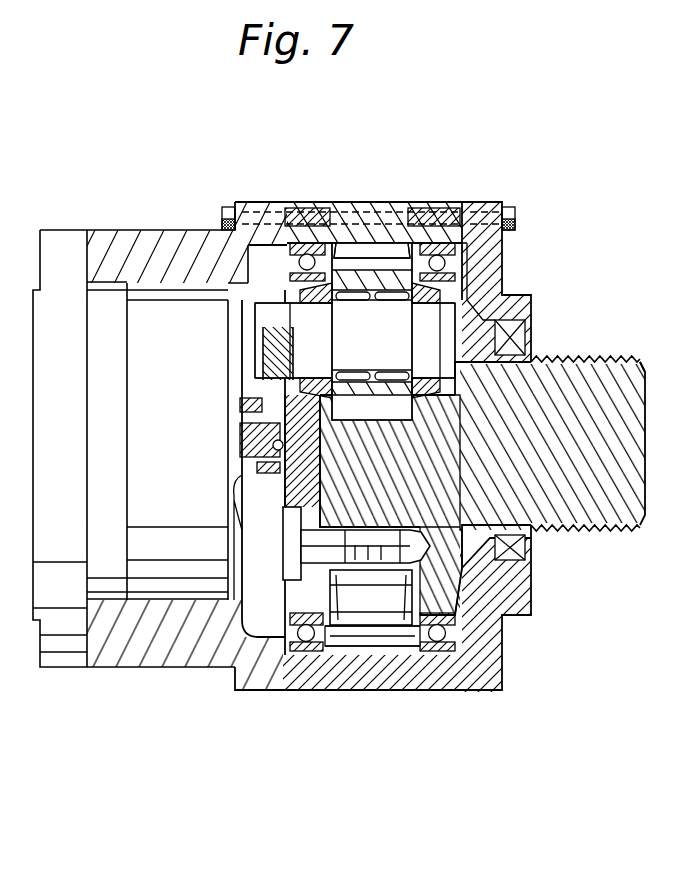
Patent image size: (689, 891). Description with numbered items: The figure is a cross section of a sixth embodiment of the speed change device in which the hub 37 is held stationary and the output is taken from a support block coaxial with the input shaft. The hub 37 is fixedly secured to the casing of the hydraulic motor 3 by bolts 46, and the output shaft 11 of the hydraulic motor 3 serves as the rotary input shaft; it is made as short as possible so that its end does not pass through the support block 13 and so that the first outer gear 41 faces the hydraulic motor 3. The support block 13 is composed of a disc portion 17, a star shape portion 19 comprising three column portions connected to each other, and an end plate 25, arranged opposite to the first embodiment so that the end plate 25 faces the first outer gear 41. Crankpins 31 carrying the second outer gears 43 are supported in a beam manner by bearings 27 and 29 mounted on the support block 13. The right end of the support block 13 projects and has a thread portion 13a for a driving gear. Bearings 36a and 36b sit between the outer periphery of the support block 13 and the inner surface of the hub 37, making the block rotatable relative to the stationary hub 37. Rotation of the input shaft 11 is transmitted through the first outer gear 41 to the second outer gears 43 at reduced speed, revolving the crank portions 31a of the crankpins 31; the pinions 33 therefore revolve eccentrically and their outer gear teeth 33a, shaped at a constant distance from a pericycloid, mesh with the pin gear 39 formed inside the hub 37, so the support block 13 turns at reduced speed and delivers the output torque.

The hydraulic motor 3 is at (45, 486).
The output shaft 11 is at (240, 447).
The support block 13 is at (580, 393).
The thread portion 13a is at (642, 362).
The disc portion 17 is at (483, 302).
The star shape portion 19 is at (350, 625).
The end plate 25 is at (312, 245).
The bearing 27 is at (440, 405).
The bearing 29 is at (327, 380).
The crankpin 31 is at (470, 345).
The crank portion 31a is at (400, 245).
The pinion 33 is at (355, 640).
The outer gear teeth 33a is at (366, 245).
The bearing 36a is at (300, 660).
The bearing 36b is at (440, 670).
The hub 37 is at (387, 310).
The pin gear 39 is at (420, 655).
The first outer gear 41 is at (236, 482).
The second outer gear 43 is at (240, 404).
The bolt 46 is at (228, 207).